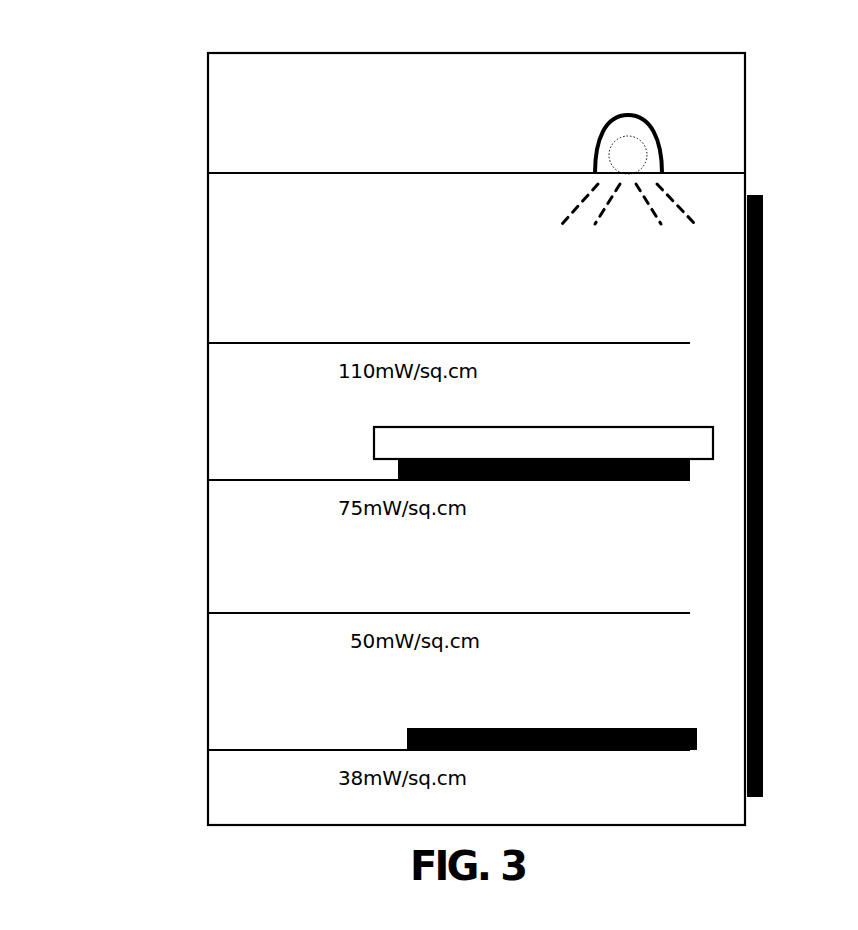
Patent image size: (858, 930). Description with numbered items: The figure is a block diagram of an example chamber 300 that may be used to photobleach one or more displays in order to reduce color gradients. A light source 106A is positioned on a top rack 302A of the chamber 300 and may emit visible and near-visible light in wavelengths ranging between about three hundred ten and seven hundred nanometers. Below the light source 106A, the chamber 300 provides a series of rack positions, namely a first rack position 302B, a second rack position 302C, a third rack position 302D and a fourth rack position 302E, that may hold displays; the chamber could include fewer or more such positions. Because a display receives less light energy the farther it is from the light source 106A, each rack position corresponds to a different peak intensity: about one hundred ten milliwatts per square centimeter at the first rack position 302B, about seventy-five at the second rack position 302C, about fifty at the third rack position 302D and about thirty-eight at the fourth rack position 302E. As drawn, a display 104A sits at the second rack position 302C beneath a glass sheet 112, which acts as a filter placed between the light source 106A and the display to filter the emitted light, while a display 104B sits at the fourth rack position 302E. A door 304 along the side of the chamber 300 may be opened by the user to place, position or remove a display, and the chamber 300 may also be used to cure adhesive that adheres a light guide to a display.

The chamber 300 is at (148, 60).
The top rack 302A is at (318, 172).
The first rack position 302B is at (338, 342).
The second rack position 302C is at (330, 478).
The third rack position 302D is at (338, 612).
The fourth rack position 302E is at (350, 748).
The door 304 is at (763, 240).
The light source 106A is at (584, 124).
The glass sheet 112 is at (543, 443).
The display 104A is at (650, 481).
The display 104B is at (643, 752).